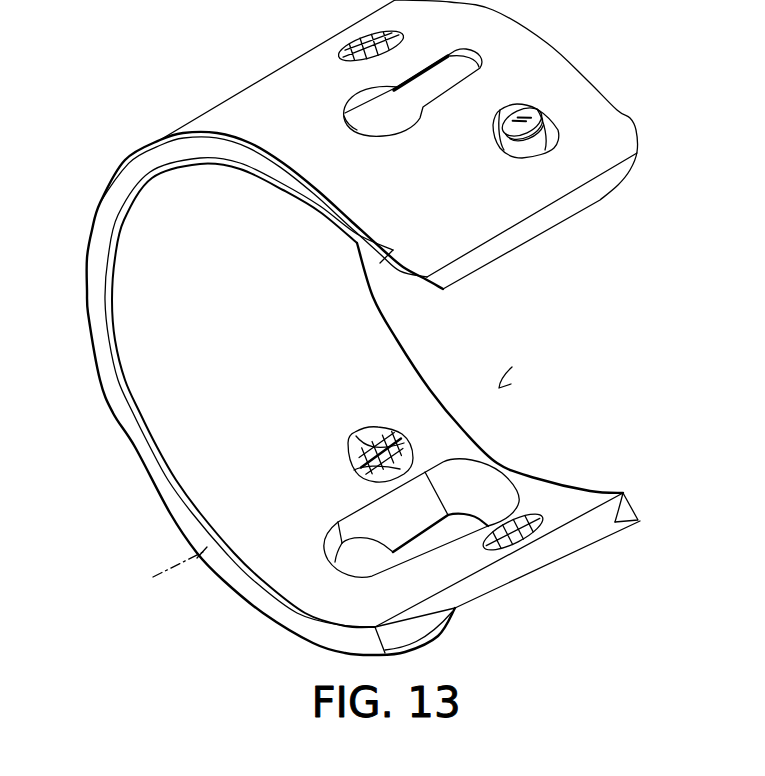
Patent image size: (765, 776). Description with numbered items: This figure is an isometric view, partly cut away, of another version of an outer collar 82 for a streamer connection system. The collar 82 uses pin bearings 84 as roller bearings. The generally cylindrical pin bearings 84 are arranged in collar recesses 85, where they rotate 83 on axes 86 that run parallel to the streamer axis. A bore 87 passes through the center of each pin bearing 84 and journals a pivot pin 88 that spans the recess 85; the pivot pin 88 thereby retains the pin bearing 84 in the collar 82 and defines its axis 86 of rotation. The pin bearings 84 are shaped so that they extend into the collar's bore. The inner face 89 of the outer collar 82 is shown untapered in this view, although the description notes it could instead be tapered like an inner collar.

The collar 82 is at (543, 53).
The rotation 83 is at (523, 156).
The pin bearings 84 is at (373, 43).
The collar recesses 85 is at (558, 132).
The axes 86 is at (458, 413).
The bore 87 is at (413, 441).
The pivot pin 88 is at (400, 441).
The inner face 89 is at (152, 412).